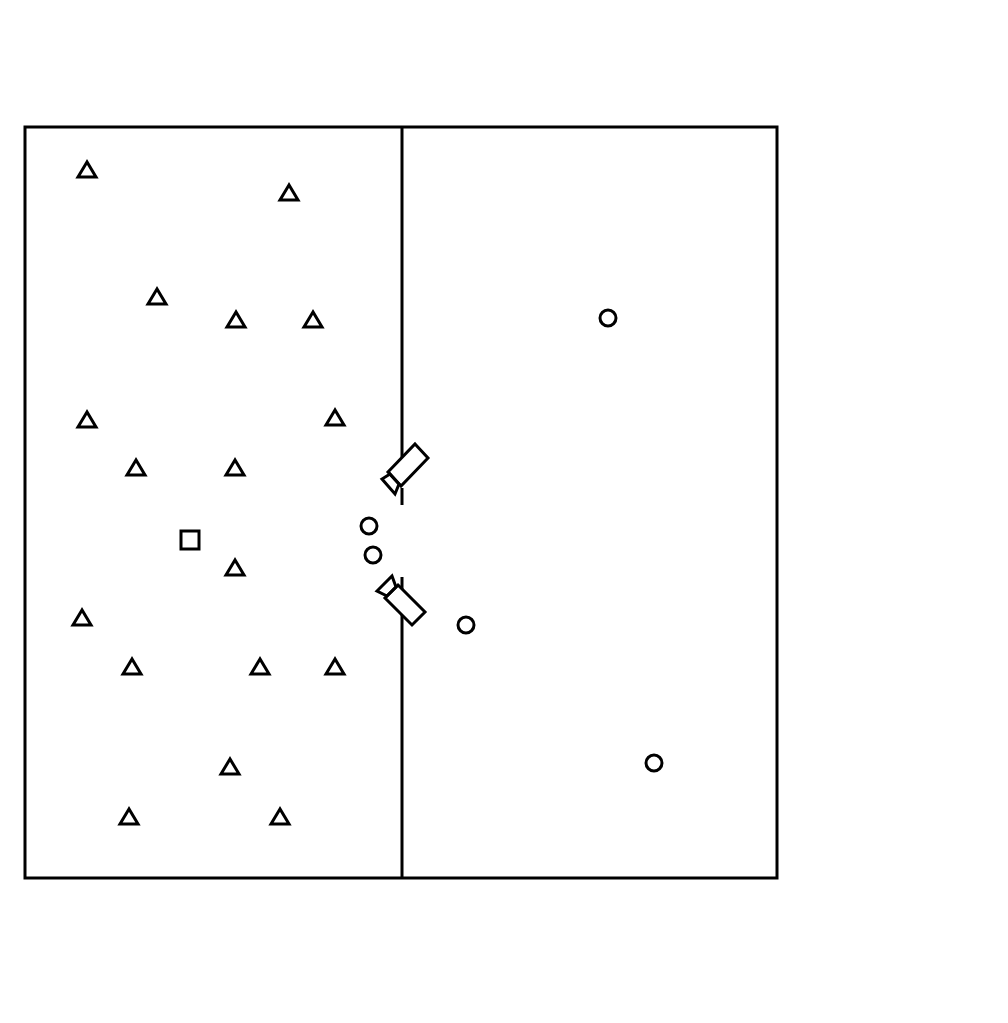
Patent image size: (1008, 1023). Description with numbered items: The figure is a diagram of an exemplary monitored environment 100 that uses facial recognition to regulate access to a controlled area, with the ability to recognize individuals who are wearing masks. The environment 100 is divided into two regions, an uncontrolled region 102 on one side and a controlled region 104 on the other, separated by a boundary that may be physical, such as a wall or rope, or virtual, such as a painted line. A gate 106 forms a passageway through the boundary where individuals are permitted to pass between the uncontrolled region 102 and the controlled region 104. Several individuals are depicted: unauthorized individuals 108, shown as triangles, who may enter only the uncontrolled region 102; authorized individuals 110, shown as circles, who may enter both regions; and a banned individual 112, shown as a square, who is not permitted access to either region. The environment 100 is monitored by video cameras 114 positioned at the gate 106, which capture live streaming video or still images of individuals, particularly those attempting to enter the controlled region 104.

The monitored environment 100 is at (778, 165).
The uncontrolled region 102 is at (203, 423).
The controlled region 104 is at (511, 397).
The gate 106 is at (400, 509).
The unauthorized individuals 108 is at (281, 198).
The authorized individuals 110 is at (598, 316).
The banned individual 112 is at (180, 542).
The video cameras 114 is at (424, 456).